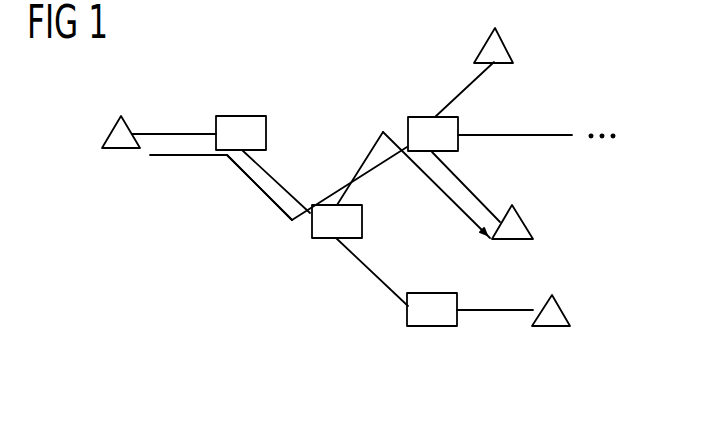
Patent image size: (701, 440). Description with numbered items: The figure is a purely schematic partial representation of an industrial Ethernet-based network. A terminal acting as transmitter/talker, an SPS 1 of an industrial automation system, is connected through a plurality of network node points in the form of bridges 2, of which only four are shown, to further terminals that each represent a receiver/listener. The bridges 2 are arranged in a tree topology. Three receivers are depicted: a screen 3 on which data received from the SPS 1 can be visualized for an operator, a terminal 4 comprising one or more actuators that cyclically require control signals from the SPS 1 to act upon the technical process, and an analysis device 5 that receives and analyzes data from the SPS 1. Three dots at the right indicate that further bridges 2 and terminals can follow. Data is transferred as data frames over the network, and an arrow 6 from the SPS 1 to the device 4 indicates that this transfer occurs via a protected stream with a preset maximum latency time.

The transmitter/talker (SPS) 1 is at (121, 151).
The bridge 2 is at (241, 116).
The screen 3 is at (505, 42).
The terminal with actuators 4 is at (522, 220).
The analysis device 5 is at (550, 328).
The arrow (stream) 6 is at (253, 183).